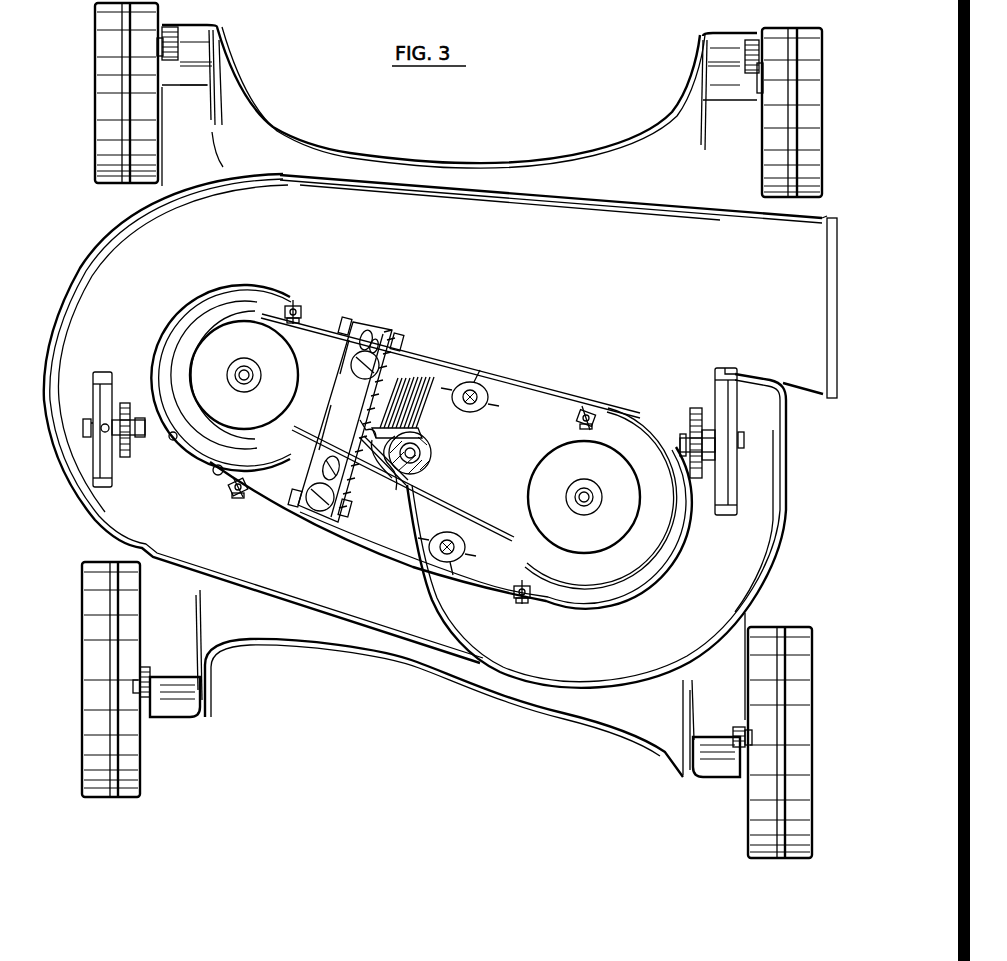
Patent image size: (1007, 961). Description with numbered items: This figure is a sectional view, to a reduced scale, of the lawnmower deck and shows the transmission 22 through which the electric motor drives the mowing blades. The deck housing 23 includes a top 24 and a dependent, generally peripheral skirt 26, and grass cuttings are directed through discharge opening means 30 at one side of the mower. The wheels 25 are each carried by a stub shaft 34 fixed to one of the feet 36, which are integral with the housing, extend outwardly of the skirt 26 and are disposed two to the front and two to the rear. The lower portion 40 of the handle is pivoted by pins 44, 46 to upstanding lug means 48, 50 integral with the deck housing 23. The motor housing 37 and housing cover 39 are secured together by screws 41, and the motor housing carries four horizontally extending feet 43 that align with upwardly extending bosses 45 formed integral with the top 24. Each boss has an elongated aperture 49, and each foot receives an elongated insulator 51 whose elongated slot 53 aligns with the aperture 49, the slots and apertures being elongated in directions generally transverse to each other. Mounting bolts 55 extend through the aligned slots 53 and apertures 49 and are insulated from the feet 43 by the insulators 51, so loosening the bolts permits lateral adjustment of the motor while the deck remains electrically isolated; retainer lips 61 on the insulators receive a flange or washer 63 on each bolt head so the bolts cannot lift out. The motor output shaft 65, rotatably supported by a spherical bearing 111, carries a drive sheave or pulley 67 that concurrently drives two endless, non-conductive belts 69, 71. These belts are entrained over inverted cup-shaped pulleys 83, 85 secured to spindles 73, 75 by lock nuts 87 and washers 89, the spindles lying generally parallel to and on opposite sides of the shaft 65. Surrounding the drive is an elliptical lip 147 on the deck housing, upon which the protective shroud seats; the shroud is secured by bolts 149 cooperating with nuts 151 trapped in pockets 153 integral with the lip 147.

The transmission 22 is at (212, 442).
The deck housing 23 is at (520, 190).
The top 24 is at (538, 310).
The wheels 25 is at (103, 60).
The skirt 26 is at (773, 578).
The discharge opening means 30 is at (830, 367).
The stub shaft 34 is at (160, 48).
The feet 36 is at (197, 50).
The motor housing 37 is at (340, 389).
The housing cover 39 is at (320, 434).
The lower portion 40 is at (112, 406).
The screws 41 is at (407, 428).
The feet 43 is at (358, 334).
The pin 44 is at (85, 430).
The bosses 45 is at (497, 410).
The pin 46 is at (745, 447).
The lug means 48 is at (108, 370).
The elongated apertures 49 is at (478, 406).
The lug means 50 is at (742, 399).
The insulator 51 is at (367, 330).
The elongated slot 53 is at (378, 348).
The mounting bolts 55 is at (378, 370).
The retainer lips 61 is at (348, 324).
The flange or washer 63 is at (394, 342).
The output shaft 65 is at (432, 449).
The drive sheave or pulley 67 is at (422, 480).
The endless belt 69 is at (266, 438).
The endless belt 71 is at (537, 437).
The spindle 73 is at (238, 367).
The spindle 75 is at (595, 497).
The pulley 83 is at (238, 328).
The pulley 85 is at (605, 469).
The lock nuts 87 is at (244, 382).
The washer 89 is at (255, 373).
The spherical bearing 111 is at (398, 486).
The elliptical lip 147 is at (614, 604).
The bolts 149 is at (298, 304).
The nuts 151 is at (300, 308).
The pockets 153 is at (291, 306).